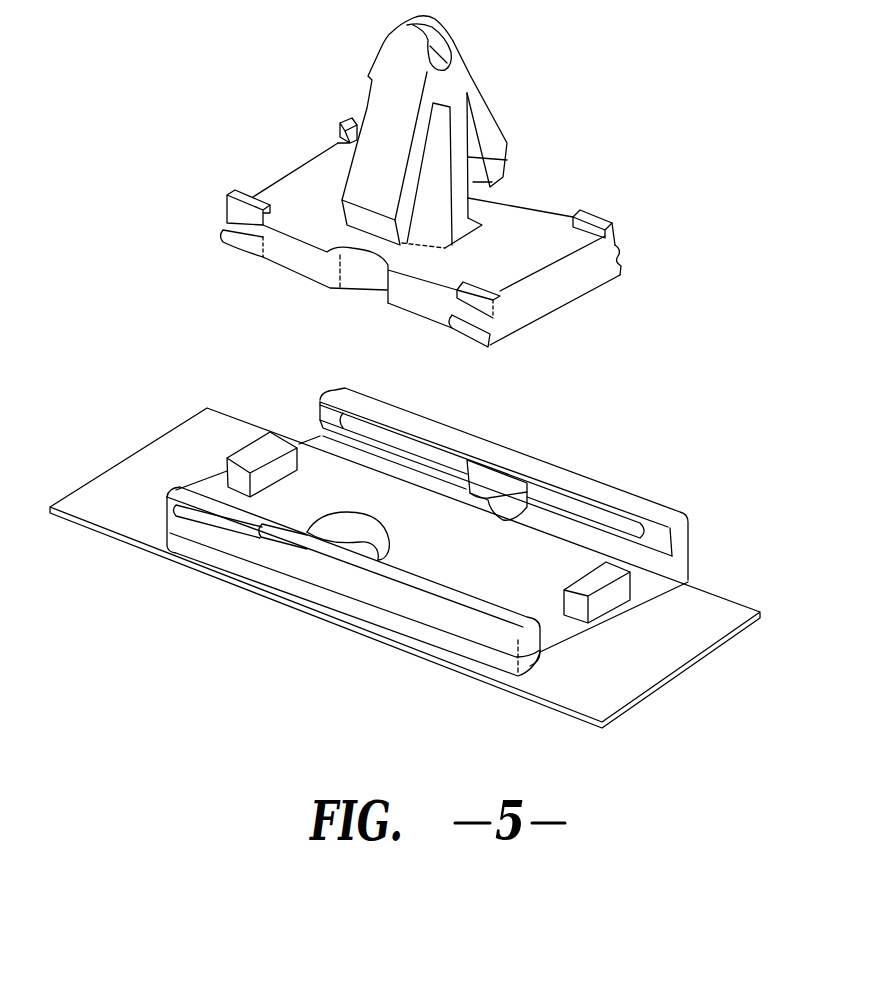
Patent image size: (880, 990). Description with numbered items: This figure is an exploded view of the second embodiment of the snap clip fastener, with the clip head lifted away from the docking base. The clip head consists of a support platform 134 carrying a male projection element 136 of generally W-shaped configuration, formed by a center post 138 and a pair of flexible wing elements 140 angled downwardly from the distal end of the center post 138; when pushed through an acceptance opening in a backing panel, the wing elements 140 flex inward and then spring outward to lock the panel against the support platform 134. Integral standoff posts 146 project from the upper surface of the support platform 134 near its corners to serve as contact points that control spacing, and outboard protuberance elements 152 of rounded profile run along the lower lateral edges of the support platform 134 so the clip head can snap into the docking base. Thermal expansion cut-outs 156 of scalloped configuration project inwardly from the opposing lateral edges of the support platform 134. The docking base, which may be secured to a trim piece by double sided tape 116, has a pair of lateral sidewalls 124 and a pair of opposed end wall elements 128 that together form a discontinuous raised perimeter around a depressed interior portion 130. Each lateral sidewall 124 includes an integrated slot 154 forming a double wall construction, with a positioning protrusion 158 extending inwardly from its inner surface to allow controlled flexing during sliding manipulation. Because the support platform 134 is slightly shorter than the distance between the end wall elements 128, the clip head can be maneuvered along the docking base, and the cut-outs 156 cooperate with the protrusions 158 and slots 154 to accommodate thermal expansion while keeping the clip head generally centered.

The double sided tape 116 is at (147, 463).
The lateral sidewalls 124 is at (205, 503).
The end wall elements 128 is at (262, 448).
The depressed interior portion 130 is at (293, 504).
The support platform 134 is at (550, 230).
The male projection element 136 is at (479, 73).
The center post 138 is at (497, 163).
The flexible wing elements 140 is at (490, 113).
The standoff posts 146 is at (248, 193).
The outboard protuberance elements 152 is at (237, 241).
The integrated slot 154 is at (488, 455).
The thermal expansion cut-outs 156 is at (497, 193).
The positioning protrusion 158 is at (537, 494).